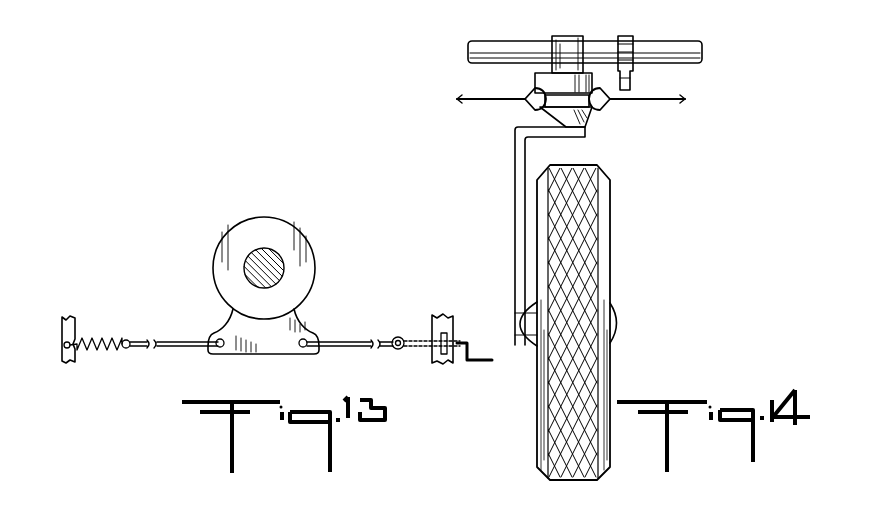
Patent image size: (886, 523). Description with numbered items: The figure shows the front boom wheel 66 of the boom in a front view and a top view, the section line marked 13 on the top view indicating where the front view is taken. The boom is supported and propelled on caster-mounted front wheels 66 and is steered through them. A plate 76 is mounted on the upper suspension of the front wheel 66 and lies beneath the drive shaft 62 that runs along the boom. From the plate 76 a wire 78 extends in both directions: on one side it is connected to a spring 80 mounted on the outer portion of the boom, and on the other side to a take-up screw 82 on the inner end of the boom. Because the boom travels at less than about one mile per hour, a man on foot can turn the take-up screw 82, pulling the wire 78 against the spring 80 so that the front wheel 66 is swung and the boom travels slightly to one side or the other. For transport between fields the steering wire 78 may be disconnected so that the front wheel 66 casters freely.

In FIG. 14, the section line 13- 13 is at (551, 73).
In FIG. 14, the drive shaft 62 is at (466, 53).
In FIG. 14, the front wheel 66 is at (604, 280).
In FIG. 13, the plate 76 is at (275, 355).
In FIG. 14, the plate 76 is at (588, 112).
In FIG. 13, the wire 78 is at (195, 342).
In FIG. 14, the wire 78 is at (509, 101).
In FIG. 13, the spring 80 is at (100, 335).
In FIG. 13, the take-up screw 82 is at (423, 339).